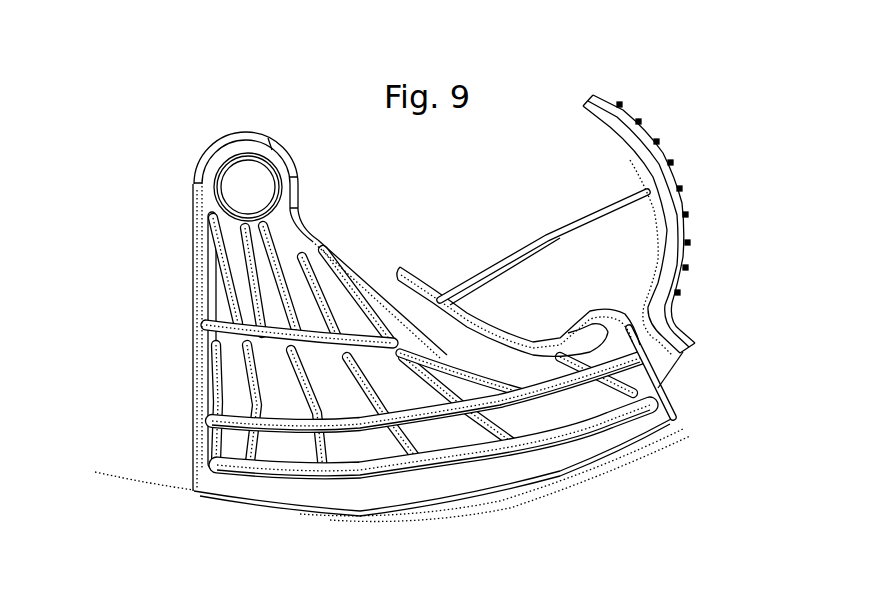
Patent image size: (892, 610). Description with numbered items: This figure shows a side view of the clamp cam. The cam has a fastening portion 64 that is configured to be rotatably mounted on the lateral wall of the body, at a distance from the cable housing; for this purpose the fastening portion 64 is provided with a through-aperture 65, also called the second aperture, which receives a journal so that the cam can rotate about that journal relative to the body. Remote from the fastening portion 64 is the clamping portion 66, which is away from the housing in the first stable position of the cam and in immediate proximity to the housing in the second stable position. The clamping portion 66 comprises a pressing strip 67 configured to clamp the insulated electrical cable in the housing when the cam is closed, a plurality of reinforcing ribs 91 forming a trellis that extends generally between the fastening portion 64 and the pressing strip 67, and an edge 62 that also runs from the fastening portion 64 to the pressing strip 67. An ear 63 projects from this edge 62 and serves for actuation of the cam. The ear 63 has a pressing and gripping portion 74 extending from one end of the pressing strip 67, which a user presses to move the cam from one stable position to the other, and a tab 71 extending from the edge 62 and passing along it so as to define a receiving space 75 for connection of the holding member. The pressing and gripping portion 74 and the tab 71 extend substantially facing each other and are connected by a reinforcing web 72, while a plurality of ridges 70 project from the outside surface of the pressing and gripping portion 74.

The edge 62 is at (350, 263).
The ear 63 is at (738, 98).
The fastening portion 64 is at (180, 116).
The through-aperture 65 is at (244, 180).
The clamping portion 66 is at (165, 452).
The pressing strip 67 is at (447, 497).
The ridges 70 is at (672, 164).
The tab 71 is at (407, 270).
The reinforcing web 72 is at (610, 218).
The pressing and gripping portion 74 is at (627, 120).
The receiving space 75 is at (540, 357).
The reinforcing ribs 91 is at (240, 278).